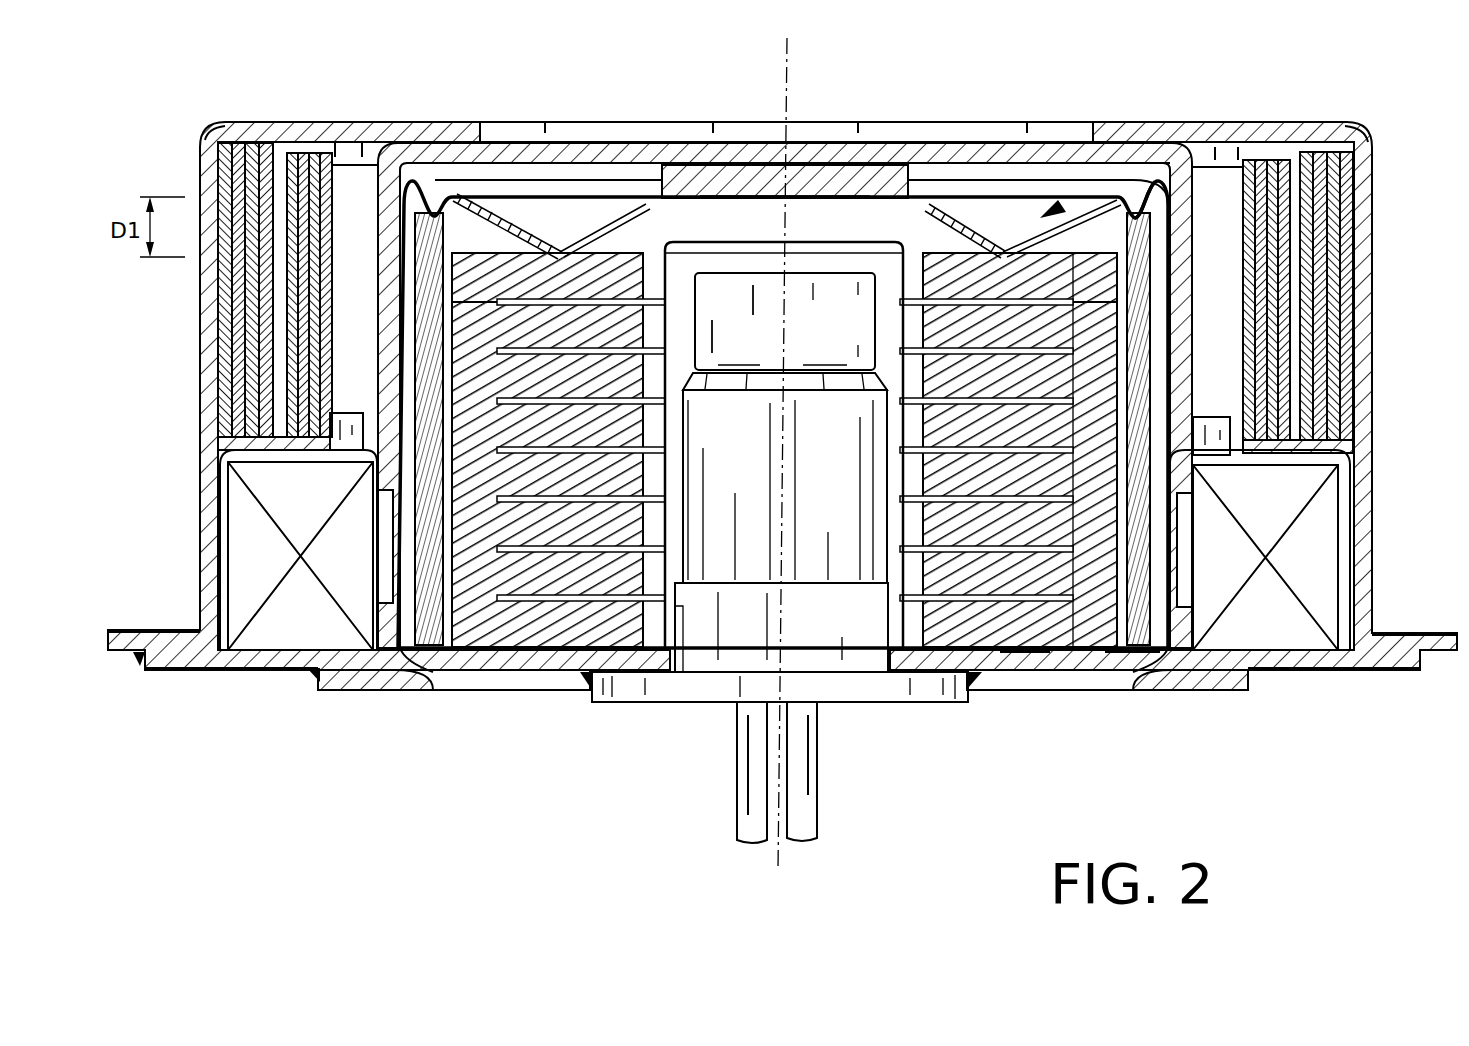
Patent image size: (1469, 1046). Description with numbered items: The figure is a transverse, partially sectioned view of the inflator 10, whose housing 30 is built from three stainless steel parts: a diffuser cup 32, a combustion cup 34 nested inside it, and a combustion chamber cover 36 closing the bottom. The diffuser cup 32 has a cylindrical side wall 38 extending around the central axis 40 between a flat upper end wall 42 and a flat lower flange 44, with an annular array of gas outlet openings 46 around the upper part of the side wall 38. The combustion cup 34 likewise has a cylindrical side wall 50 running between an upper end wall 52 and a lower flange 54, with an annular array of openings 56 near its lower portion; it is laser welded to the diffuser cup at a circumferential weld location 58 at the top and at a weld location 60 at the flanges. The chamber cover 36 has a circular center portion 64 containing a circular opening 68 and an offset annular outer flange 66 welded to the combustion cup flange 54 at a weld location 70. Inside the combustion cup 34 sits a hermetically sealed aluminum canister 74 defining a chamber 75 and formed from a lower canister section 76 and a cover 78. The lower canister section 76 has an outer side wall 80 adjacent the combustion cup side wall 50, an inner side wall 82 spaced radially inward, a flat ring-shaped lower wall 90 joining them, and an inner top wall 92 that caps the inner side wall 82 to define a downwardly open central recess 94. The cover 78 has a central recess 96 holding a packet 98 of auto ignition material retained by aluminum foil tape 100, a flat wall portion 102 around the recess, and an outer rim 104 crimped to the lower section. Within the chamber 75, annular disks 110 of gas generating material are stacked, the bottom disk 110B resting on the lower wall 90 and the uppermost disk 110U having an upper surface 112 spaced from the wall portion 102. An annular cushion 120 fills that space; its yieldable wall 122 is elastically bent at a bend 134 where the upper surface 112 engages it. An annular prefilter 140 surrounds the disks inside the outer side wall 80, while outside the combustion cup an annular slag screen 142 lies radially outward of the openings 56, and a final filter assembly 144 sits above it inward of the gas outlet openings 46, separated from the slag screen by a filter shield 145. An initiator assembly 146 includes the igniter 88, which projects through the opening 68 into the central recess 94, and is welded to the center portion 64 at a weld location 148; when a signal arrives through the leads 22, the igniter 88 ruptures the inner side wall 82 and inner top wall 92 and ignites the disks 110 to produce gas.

The inflator 10 is at (436, 72).
The leads 22 is at (810, 823).
The housing 30 is at (188, 436).
The diffuser cup 32 is at (110, 655).
The combustion cup 34 is at (198, 672).
The combustion chamber cover 36 is at (335, 697).
The side wall 38 is at (1372, 432).
The central axis 40 is at (787, 52).
The upper end wall 42 is at (1265, 123).
The lower flange 44 is at (1410, 633).
The gas outlet openings 46 is at (212, 303).
The side wall 50 is at (1187, 327).
The upper end wall 52 is at (1048, 122).
The lower flange 54 is at (1340, 670).
The openings 56 is at (1183, 582).
The weld location 58 is at (1097, 138).
The weld location 60 is at (1424, 662).
The center portion 64 is at (1115, 660).
The outer flange 66 is at (1208, 680).
The opening 68 is at (877, 678).
The weld location 70 is at (1252, 682).
The canister 74 is at (1000, 175).
The chamber 75 is at (1090, 197).
The lower canister section 76 is at (890, 478).
The cover 78 is at (557, 127).
The outer side wall 80 is at (1165, 292).
The inner side wall 82 is at (890, 433).
The igniter 88 is at (832, 285).
The lower wall 90 is at (1012, 658).
The inner top wall 92 is at (731, 300).
The central recess 94 is at (775, 262).
The recess 96 is at (838, 160).
The packet 98 is at (700, 165).
The aluminum foil tape 100 is at (882, 195).
The wall portion 102 is at (950, 190).
The outer rim 104 is at (437, 124).
The annular disks 110 is at (647, 480).
The uppermost disk 110U is at (933, 277).
The bottom disk 110B is at (893, 628).
The upper surface 112 is at (740, 285).
The annular cushion 120 is at (540, 190).
The yieldable wall 122 is at (512, 220).
The bend 134 is at (565, 258).
The annular prefilter 140 is at (1150, 390).
The annular slag screen 142 is at (1322, 535).
The final filter assembly 144 is at (1345, 248).
The filter shield 145 is at (1375, 472).
The initiator assembly 146 is at (685, 718).
The weld location 148 is at (976, 680).